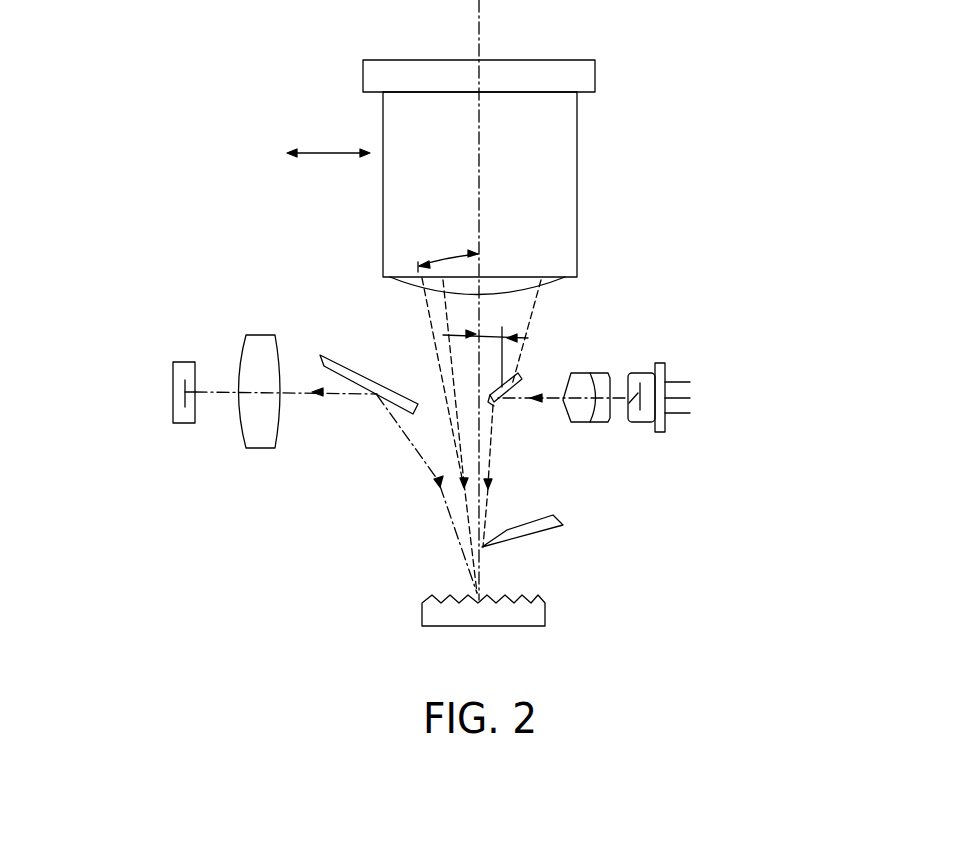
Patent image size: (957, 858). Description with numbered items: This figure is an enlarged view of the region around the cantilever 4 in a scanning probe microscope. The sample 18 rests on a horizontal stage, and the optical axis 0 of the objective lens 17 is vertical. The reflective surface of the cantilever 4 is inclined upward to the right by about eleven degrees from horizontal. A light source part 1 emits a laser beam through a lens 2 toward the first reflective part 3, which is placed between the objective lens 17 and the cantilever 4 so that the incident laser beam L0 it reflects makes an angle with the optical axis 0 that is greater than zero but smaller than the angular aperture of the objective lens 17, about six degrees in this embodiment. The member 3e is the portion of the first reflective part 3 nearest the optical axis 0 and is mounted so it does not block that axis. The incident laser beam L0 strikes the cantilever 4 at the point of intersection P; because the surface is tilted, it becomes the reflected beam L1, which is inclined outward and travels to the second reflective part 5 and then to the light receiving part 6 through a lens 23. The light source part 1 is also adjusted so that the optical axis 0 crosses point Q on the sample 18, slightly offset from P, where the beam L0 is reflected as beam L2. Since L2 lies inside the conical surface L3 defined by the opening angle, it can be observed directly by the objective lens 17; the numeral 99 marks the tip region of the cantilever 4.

The optical axis 0 is at (492, 300).
The light source part 1 is at (670, 367).
The collimating lens 2 is at (591, 421).
The first reflective part 3 is at (675, 331).
The member 3e is at (495, 412).
The cantilever 4 is at (563, 532).
The second reflective part 5 is at (322, 355).
The light receiving part 6 is at (173, 392).
The objective lens 17 is at (577, 180).
The sample 18 is at (547, 617).
The condensing lens 23 is at (260, 448).
The probe tip point 99 is at (487, 557).
The point of intersection P is at (490, 537).
The point on the sample surface Q is at (473, 597).
The incident laser beam L0 is at (493, 456).
The reflected beam L1 is at (421, 456).
The reflected beam L2 is at (440, 310).
The conical surface L3 is at (440, 365).